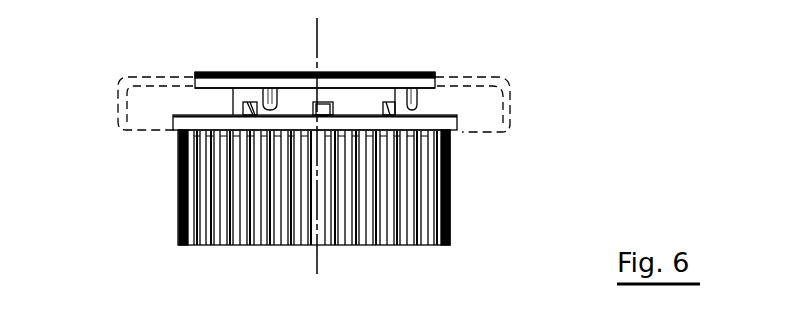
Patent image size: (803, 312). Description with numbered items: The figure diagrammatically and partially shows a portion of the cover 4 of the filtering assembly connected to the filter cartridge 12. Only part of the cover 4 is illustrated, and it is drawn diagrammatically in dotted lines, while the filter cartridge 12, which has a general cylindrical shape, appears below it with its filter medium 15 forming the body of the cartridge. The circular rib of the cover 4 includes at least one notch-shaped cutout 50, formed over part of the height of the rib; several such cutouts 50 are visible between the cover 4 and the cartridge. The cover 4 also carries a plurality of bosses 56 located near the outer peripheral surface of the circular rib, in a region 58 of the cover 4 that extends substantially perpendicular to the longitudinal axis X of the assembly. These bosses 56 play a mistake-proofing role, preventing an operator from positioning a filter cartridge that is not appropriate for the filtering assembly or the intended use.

The cover 4 is at (433, 74).
The filter cartridge 12 is at (266, 218).
The filter medium 15 is at (357, 210).
The cutout 50 is at (242, 112).
The bosses 56 is at (269, 99).
The region 58 is at (388, 87).
The longitudinal axis X is at (316, 258).